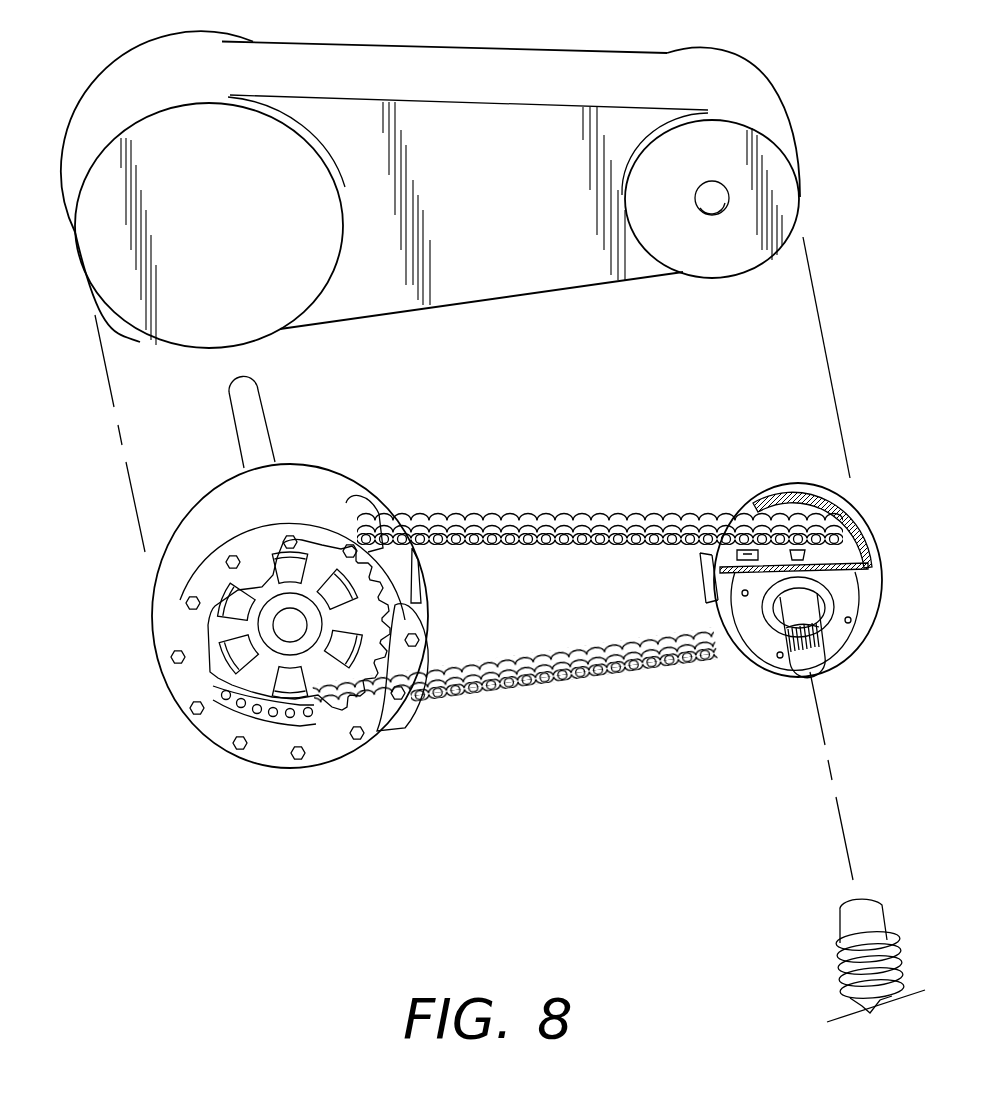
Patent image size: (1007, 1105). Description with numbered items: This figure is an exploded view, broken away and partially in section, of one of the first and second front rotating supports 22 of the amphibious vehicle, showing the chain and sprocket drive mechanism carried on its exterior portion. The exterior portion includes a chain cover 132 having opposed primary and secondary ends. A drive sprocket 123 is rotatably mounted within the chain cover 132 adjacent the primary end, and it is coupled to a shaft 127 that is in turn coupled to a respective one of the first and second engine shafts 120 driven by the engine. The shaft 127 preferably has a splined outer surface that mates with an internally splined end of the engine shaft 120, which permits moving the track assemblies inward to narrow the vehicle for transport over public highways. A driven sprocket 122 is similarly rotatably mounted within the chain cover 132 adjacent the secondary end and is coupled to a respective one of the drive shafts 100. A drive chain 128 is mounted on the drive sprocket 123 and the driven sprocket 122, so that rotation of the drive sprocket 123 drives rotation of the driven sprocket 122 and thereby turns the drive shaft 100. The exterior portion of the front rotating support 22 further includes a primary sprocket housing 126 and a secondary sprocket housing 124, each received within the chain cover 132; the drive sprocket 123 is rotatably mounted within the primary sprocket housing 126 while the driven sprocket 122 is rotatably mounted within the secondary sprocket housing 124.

The front rotating support 22 is at (96, 793).
The drive shaft 100 is at (258, 420).
The engine shaft 120 is at (838, 968).
The driven sprocket 122 is at (233, 625).
The drive sprocket 123 is at (762, 552).
The secondary sprocket housing 124 is at (275, 762).
The primary sprocket housing 126 is at (850, 648).
The shaft 127 is at (810, 672).
The drive chain 128 is at (562, 677).
The chain cover 132 is at (767, 82).